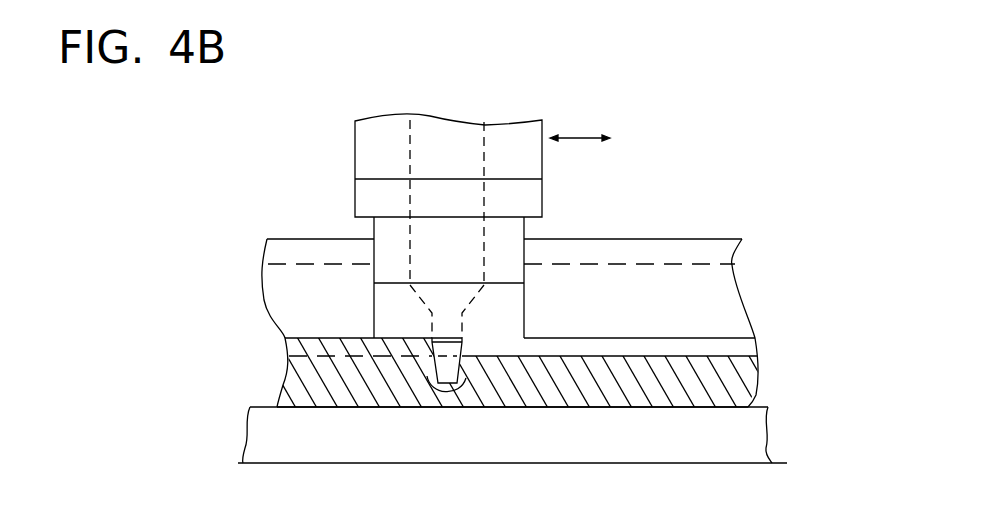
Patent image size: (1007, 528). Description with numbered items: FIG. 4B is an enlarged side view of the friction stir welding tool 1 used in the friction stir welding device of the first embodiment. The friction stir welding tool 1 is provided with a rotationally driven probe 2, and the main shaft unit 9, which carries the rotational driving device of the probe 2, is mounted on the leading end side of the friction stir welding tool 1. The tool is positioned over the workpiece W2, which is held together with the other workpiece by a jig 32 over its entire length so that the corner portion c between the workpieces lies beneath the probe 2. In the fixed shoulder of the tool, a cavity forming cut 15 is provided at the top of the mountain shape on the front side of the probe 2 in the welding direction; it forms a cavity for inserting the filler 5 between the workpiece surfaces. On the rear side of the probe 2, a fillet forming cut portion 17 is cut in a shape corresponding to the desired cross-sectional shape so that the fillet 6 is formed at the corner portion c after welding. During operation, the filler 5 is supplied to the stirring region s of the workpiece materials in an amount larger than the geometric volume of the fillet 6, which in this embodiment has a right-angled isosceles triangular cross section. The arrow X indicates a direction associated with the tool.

The main shaft unit 9 is at (362, 135).
The friction stir welding tool 1 is at (374, 225).
The cavity forming cut 15 is at (490, 338).
The fillet forming cut portion 17 is at (403, 338).
The fillet 6 is at (305, 337).
The filler 5 is at (733, 348).
The corner portion c is at (570, 355).
The probe 2 is at (448, 377).
The stirring region s is at (432, 385).
The jig 32 is at (760, 437).
The workpiece W2 is at (693, 247).
The X direction X is at (580, 126).